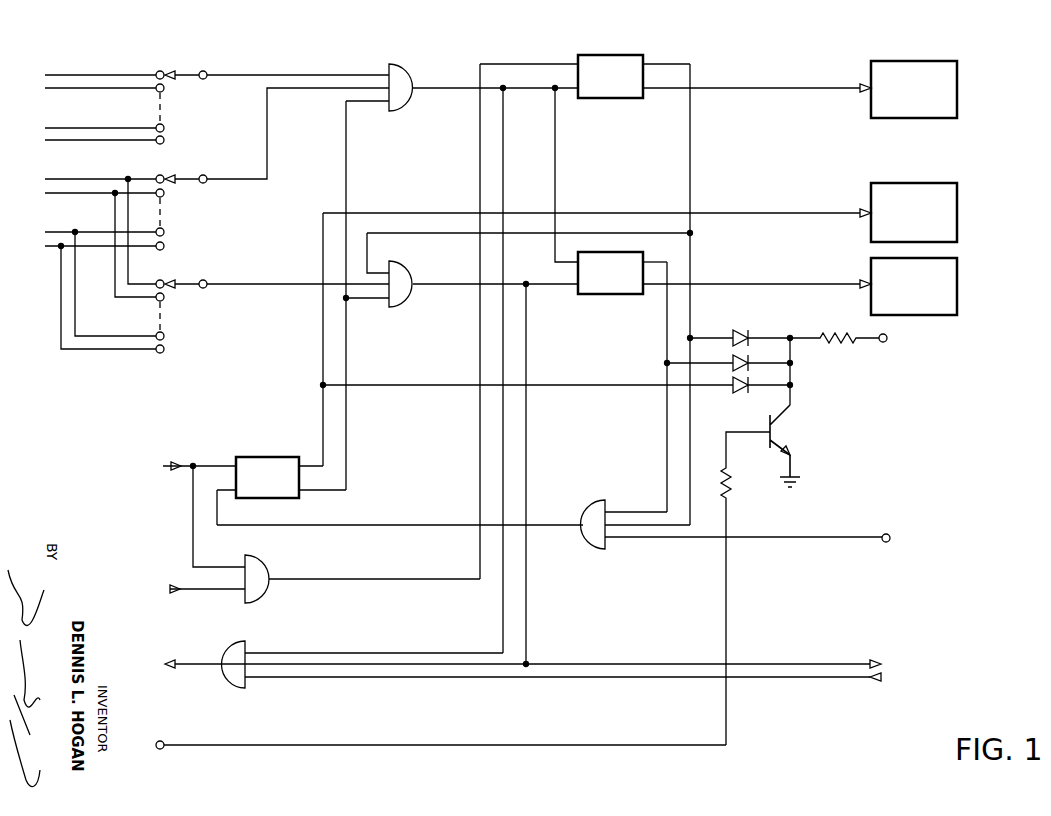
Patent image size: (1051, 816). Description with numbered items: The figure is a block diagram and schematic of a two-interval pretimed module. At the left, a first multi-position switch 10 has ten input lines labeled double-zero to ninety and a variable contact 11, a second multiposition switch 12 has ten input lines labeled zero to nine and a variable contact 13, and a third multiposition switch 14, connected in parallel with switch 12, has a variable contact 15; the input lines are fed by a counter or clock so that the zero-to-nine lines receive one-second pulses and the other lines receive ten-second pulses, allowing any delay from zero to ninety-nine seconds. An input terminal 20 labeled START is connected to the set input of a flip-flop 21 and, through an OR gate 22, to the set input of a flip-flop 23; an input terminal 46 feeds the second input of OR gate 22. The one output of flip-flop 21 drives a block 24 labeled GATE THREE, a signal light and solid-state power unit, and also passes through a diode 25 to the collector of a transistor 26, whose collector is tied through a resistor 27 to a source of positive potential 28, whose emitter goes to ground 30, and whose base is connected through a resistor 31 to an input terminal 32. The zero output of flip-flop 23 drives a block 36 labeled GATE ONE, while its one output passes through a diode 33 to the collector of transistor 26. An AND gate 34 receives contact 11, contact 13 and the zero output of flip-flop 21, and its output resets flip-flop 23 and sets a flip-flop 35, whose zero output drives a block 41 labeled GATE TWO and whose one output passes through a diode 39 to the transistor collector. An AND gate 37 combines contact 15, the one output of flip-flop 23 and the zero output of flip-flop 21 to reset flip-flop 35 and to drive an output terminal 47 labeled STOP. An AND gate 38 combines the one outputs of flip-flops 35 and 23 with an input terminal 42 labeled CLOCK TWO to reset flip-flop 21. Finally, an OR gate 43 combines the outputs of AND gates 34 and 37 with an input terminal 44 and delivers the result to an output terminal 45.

The first multi-position switch 10 is at (199, 120).
The variable contact 11 is at (187, 73).
The second multiposition switch 12 is at (199, 223).
The variable contact 13 is at (187, 177).
The third multiposition switch 14 is at (199, 327).
The variable contact 15 is at (187, 282).
The input terminal 20 is at (178, 470).
The flip-flop 21 is at (276, 485).
The OR gate 22 is at (272, 569).
The flip-flop 23 is at (620, 84).
The block labeled GATE 3 24 is at (902, 184).
The diode 25 is at (738, 388).
The transistor 26 is at (812, 443).
The resistor 27 is at (828, 334).
The source of positive energizing potential 28 is at (884, 343).
The common conductor or ground 30 is at (803, 473).
The resistor 31 is at (721, 478).
The input terminal 32 is at (161, 743).
The diode 33 is at (745, 327).
The AND gate 34 is at (414, 78).
The flip-flop 35 is at (620, 281).
The block labeled GATE 1 36 is at (900, 62).
The AND gate 37 is at (414, 273).
The AND gate 38 is at (582, 505).
The diode 39 is at (751, 361).
The block labeled GATE 2 41 is at (871, 264).
The input terminal 42 is at (886, 534).
The OR gate 43 is at (224, 651).
The input terminal 44 is at (876, 681).
The output terminal 45 is at (167, 662).
The input terminal 46 is at (171, 587).
The output terminal 47 is at (873, 659).